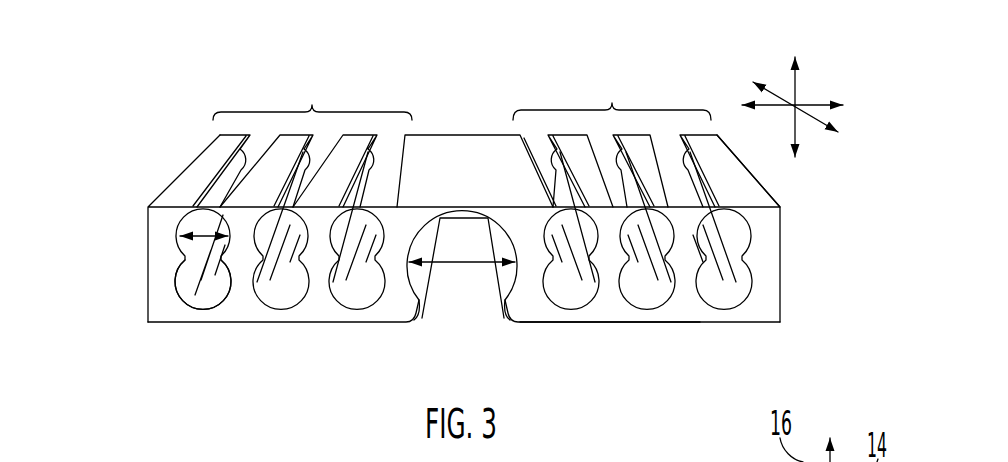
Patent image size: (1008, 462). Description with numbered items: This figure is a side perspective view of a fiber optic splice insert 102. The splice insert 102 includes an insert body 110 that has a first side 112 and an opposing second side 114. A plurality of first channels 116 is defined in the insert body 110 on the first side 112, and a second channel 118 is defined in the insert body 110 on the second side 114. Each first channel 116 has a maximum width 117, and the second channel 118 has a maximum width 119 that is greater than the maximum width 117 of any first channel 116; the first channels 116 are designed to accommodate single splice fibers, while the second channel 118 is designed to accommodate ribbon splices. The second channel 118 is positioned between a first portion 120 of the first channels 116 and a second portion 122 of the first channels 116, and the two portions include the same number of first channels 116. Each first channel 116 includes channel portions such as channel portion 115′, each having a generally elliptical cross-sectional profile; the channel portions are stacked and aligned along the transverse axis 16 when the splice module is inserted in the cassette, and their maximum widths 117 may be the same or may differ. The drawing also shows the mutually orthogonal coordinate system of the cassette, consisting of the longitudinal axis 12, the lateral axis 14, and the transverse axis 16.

The splice insert 102 is at (75, 212).
The insert body 110 is at (417, 214).
The first side 112 is at (573, 130).
The second side 114 is at (537, 330).
The channel portion 115′ is at (183, 225).
The first channel 116 is at (286, 305).
The maximum width 117 is at (203, 233).
The second channel 118 is at (461, 336).
The maximum width 119 is at (456, 266).
The first portion 120 is at (312, 186).
The second portion 122 is at (612, 186).
The longitudinal axis 12 is at (748, 92).
The lateral axis 14 is at (813, 102).
The transverse axis 16 is at (789, 73).